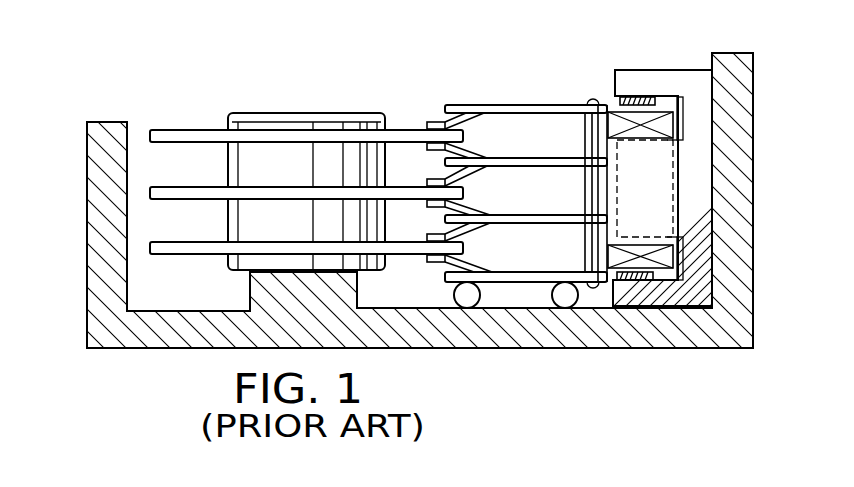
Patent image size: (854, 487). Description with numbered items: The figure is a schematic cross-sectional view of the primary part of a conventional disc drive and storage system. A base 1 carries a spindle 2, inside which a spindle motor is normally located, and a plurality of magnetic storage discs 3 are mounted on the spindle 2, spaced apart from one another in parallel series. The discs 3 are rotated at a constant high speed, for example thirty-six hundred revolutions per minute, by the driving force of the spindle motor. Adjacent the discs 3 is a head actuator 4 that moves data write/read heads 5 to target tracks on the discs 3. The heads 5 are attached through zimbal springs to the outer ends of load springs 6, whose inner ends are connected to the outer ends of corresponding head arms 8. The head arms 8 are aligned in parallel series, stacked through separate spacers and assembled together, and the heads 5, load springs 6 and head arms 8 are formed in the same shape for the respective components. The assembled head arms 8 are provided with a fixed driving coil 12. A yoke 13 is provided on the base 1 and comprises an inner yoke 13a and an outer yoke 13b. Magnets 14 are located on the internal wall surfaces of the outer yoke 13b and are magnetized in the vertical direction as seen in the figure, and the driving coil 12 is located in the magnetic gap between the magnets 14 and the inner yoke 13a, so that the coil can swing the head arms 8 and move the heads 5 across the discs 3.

The base 1 is at (102, 323).
The spindle 2 is at (293, 112).
The magnetic storage discs 3 is at (193, 128).
The head actuator 4 is at (508, 72).
The data write/read heads 5 is at (430, 120).
The load springs 6 is at (436, 121).
The head arms 8 is at (540, 104).
The driving coil 12 is at (673, 122).
The yoke 13 is at (748, 390).
The inner yoke 13a is at (679, 262).
The outer yoke 13b is at (667, 283).
The magnets 14 is at (662, 95).